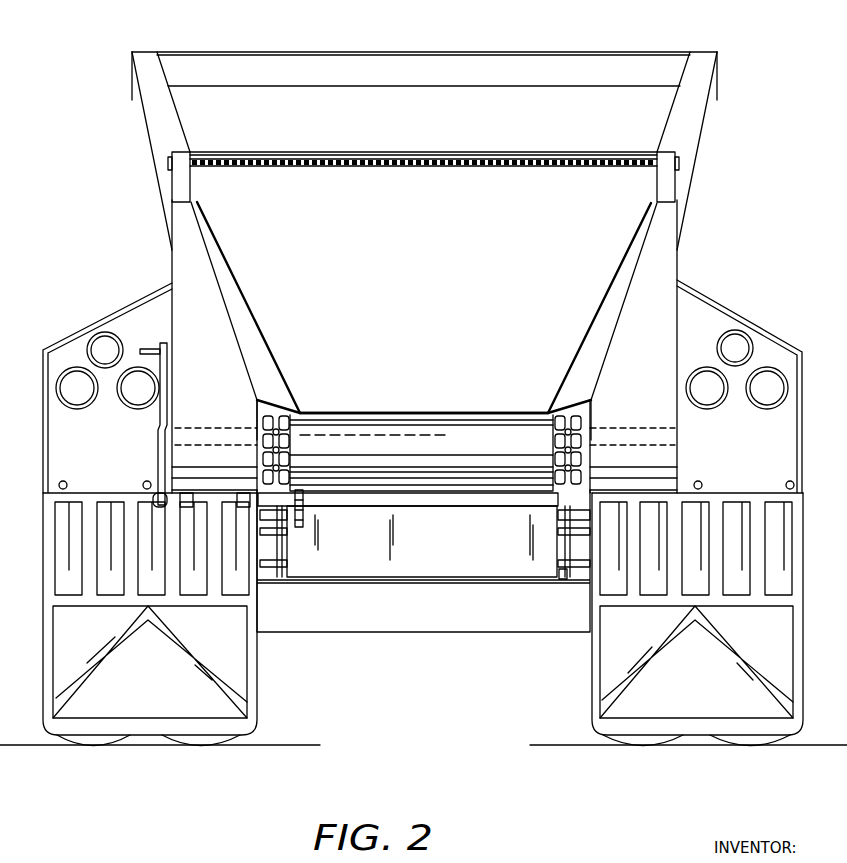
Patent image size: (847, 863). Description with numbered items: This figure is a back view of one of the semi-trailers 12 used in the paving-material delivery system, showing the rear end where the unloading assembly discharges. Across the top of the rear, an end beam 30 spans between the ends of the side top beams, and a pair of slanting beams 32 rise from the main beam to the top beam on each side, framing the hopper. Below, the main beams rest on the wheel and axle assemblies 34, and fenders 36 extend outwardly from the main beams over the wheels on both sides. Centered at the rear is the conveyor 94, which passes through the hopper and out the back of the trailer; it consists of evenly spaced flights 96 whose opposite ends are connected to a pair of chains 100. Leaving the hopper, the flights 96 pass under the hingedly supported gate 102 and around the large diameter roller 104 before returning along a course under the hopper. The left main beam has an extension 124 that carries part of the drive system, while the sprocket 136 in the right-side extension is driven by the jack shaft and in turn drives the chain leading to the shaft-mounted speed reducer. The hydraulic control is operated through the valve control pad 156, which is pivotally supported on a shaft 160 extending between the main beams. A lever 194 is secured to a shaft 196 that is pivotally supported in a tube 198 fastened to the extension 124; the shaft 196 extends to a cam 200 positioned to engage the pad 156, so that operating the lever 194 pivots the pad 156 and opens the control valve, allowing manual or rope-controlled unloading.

The trailer 12 is at (96, 85).
The end beam 30 is at (236, 60).
The slanting beam 32 is at (148, 148).
The wheel and axle assembly 34 is at (286, 650).
The fender 36 is at (86, 325).
The conveyor 94 is at (388, 398).
The flight 96 is at (478, 420).
The chain 100 is at (258, 419).
The gate 102 is at (365, 185).
The roller 104 is at (512, 480).
The extension of left side main beam 124 is at (186, 263).
The sprocket 136 is at (660, 272).
The valve control pad 156 is at (458, 563).
The shaft 160 is at (563, 573).
The lever 194 is at (158, 449).
The shaft 196 is at (153, 503).
The tube 198 is at (240, 508).
The cam 200 is at (304, 525).